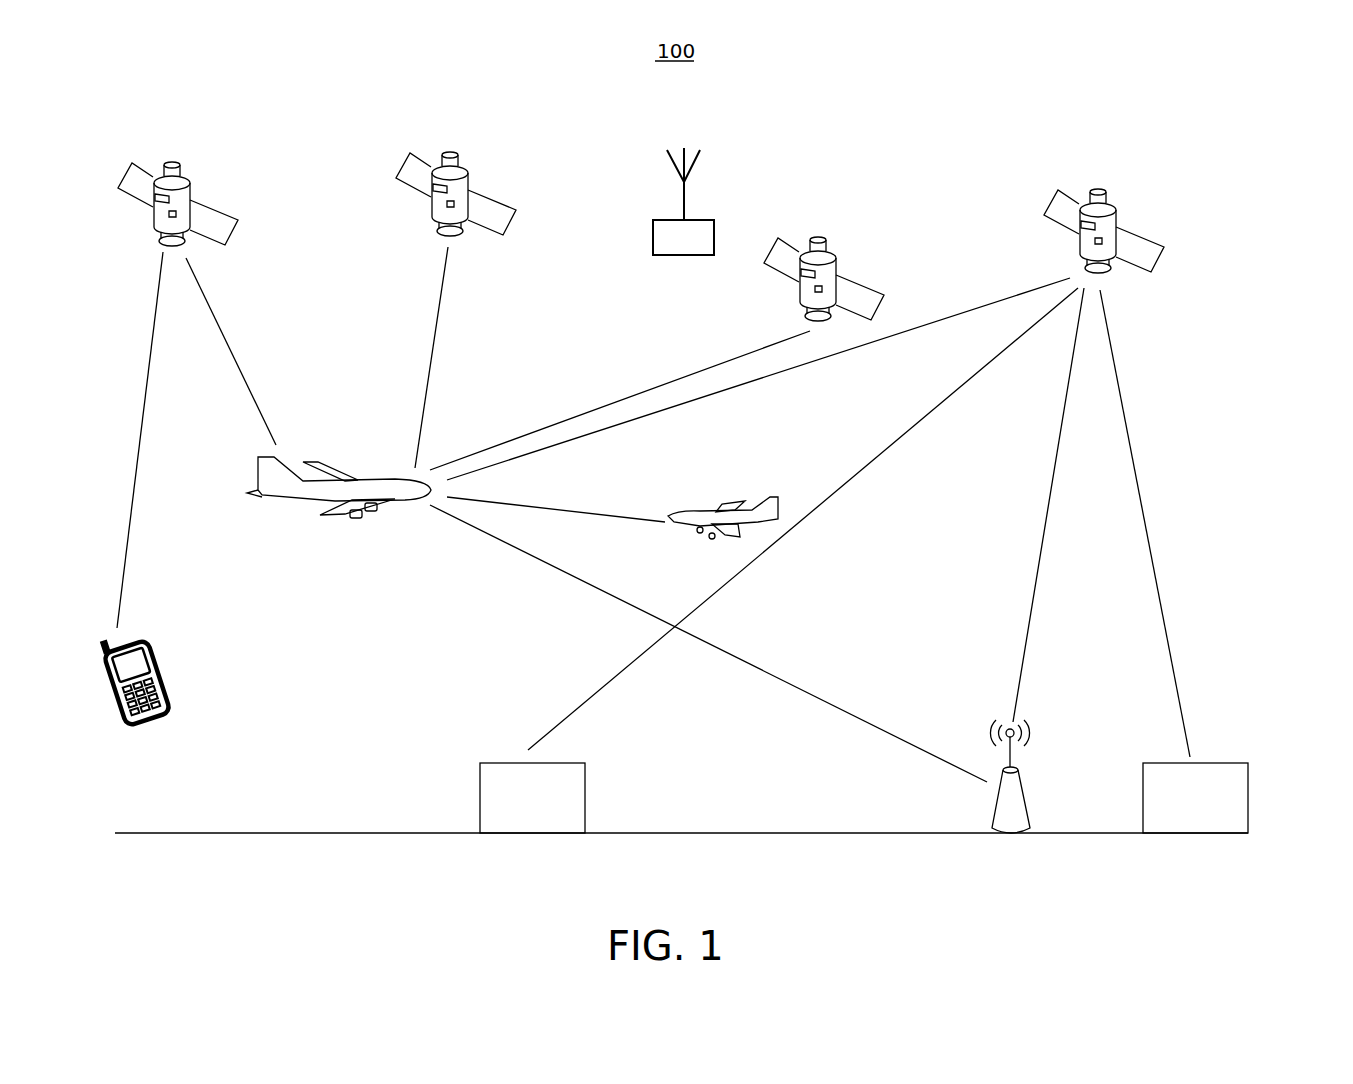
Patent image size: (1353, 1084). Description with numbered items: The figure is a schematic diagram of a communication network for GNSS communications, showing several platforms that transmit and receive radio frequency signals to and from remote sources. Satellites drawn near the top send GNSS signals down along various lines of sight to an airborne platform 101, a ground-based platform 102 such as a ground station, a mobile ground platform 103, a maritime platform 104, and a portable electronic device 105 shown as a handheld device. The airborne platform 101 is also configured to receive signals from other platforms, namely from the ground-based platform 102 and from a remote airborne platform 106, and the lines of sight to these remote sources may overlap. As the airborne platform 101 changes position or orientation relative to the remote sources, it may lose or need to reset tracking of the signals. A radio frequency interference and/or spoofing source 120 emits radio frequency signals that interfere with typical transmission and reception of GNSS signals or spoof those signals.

The radio frequency interference and/or spoofing source 120 is at (707, 194).
The airborne platform 101 is at (303, 519).
The remote airborne platform 106 is at (695, 495).
The portable electronic device 105 is at (172, 660).
The mobile ground platform 103 is at (466, 800).
The maritime platform 104 is at (1220, 752).
The ground-based platform 102 is at (1037, 800).